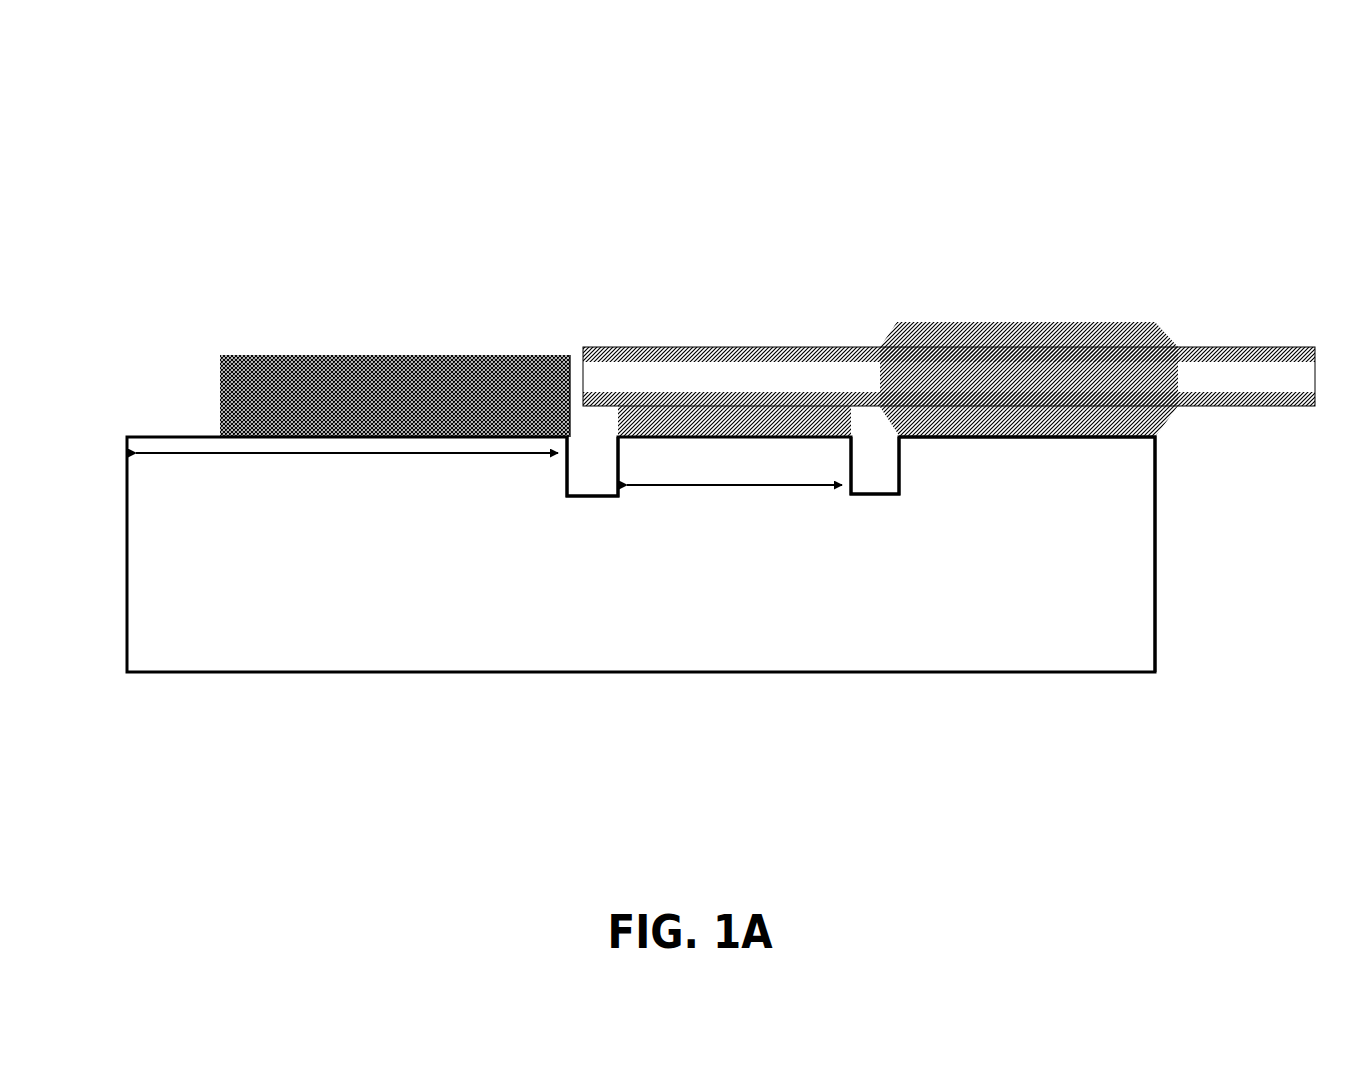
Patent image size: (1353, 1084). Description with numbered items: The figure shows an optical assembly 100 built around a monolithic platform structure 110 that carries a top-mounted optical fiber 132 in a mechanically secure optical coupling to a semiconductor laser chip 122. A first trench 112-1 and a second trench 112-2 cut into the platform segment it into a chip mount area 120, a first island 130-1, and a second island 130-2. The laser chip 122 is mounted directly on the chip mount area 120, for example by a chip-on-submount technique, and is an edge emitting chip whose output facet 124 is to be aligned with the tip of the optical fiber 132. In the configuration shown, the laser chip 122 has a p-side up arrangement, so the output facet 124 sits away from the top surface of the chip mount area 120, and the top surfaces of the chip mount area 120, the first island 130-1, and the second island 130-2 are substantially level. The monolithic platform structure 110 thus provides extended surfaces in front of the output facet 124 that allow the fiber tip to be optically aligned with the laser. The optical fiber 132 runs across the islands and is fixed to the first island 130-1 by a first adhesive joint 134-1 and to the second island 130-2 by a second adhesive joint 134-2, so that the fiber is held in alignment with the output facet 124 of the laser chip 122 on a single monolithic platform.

The optical assembly 100 is at (190, 72).
The monolithic platform structure 110 is at (430, 675).
The first trench 112-1 is at (598, 507).
The second trench 112-2 is at (869, 506).
The chip mount area 120 is at (357, 458).
The laser chip 122 is at (393, 355).
The output facet 124 is at (572, 372).
The first island 130-1 is at (741, 490).
The second island 130-2 is at (1096, 463).
The optical fiber 132 is at (757, 350).
The first adhesive joint 134-1 is at (762, 426).
The second adhesive joint 134-2 is at (1036, 322).